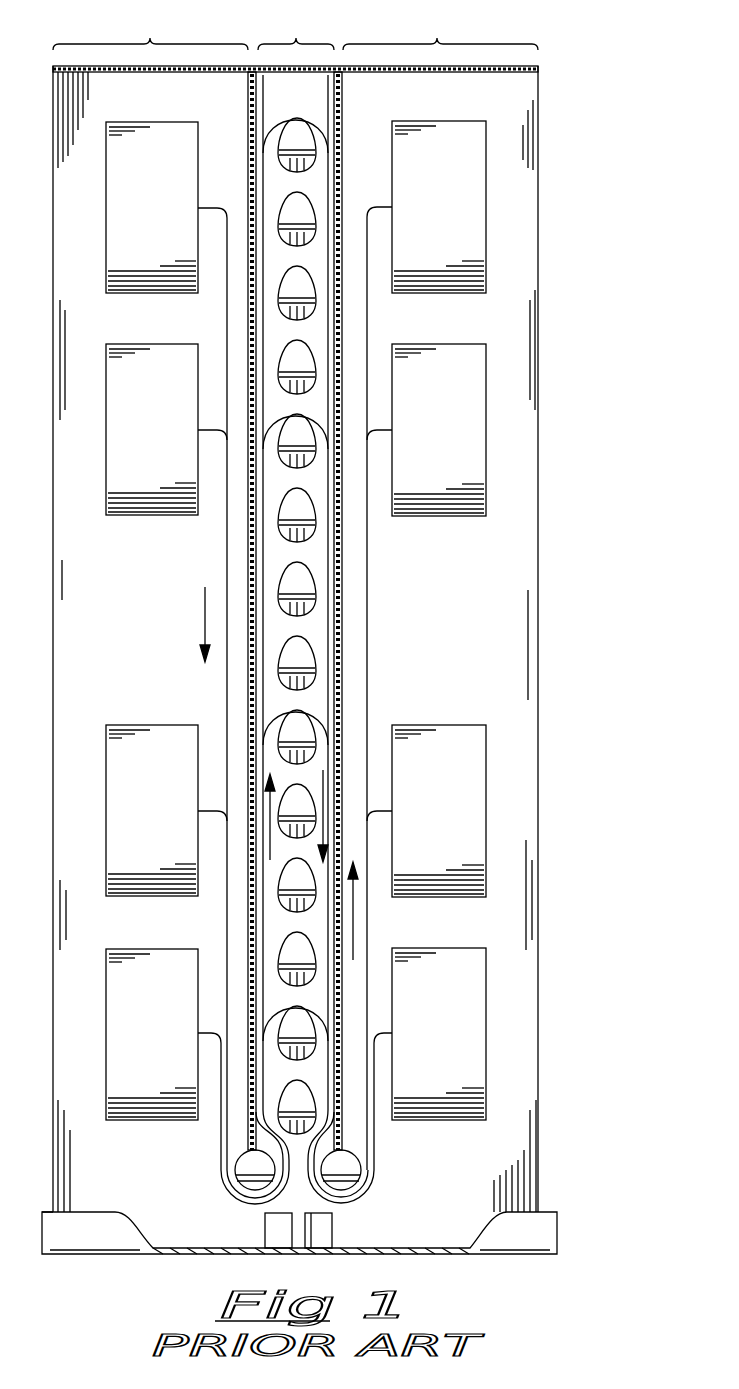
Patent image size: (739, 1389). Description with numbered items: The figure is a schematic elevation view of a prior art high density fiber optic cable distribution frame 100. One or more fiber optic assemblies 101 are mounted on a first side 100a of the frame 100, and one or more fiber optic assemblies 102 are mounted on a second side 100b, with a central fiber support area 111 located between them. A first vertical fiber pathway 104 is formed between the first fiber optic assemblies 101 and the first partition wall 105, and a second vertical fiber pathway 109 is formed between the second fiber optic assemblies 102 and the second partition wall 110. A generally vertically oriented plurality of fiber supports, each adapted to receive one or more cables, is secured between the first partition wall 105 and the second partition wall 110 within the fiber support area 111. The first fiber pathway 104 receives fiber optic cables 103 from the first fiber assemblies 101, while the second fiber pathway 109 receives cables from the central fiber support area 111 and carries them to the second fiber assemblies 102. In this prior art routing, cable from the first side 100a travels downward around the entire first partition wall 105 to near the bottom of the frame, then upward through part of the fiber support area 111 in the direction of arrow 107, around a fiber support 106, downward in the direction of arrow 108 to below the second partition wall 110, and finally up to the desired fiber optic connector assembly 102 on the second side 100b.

The distribution frame 100 is at (578, 223).
The first side 100a is at (186, 32).
The second side 100b is at (476, 32).
The fiber support area 111 is at (296, 27).
The fiber optic assemblies 101 is at (175, 225).
The fiber optic assemblies 102 is at (462, 225).
The fiber optic cables 103 is at (226, 325).
The first vertical fiber pathway 104 is at (205, 617).
The first partition wall 105 is at (246, 104).
The fiber support 106 is at (300, 516).
The arrow 107 is at (268, 832).
The arrow 108 is at (323, 787).
The second vertical fiber pathway 109 is at (356, 918).
The second partition wall 110 is at (344, 101).